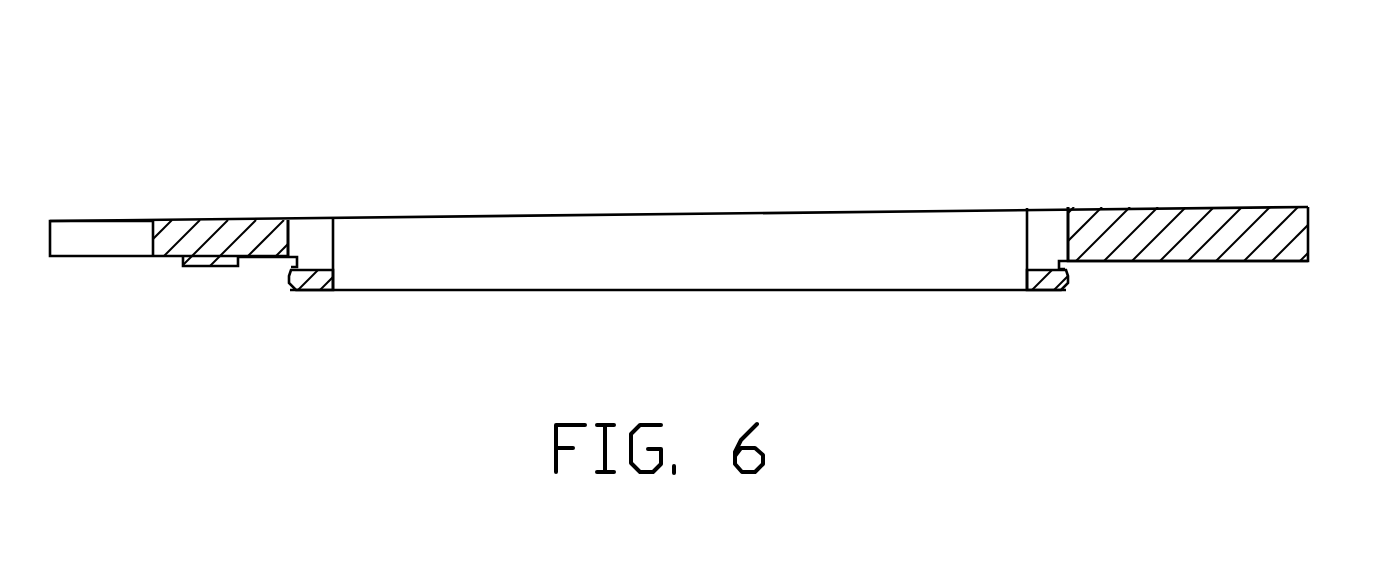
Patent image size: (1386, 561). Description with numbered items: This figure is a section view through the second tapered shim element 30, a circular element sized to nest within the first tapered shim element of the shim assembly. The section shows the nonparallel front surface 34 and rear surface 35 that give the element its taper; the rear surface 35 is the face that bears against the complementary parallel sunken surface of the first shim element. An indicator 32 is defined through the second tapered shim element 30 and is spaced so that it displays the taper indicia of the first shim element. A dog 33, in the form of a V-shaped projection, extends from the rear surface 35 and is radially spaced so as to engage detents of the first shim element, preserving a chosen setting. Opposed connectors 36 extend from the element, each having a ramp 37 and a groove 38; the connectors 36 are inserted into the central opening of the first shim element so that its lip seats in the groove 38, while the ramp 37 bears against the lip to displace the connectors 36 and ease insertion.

The second tapered shim element 30 is at (410, 203).
The indicator 32 is at (107, 233).
The dog 33 is at (188, 268).
The front surface 34 is at (1198, 207).
The rear surface 35 is at (1222, 262).
The connectors 36 is at (313, 289).
The ramp 37 is at (297, 290).
The groove 38 is at (262, 267).